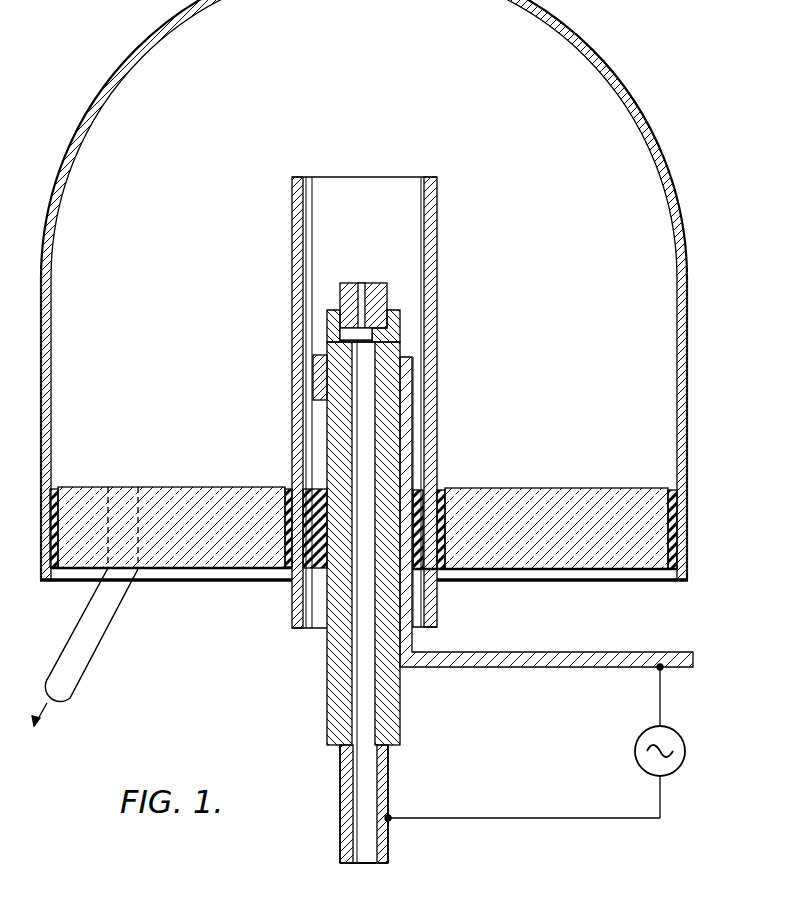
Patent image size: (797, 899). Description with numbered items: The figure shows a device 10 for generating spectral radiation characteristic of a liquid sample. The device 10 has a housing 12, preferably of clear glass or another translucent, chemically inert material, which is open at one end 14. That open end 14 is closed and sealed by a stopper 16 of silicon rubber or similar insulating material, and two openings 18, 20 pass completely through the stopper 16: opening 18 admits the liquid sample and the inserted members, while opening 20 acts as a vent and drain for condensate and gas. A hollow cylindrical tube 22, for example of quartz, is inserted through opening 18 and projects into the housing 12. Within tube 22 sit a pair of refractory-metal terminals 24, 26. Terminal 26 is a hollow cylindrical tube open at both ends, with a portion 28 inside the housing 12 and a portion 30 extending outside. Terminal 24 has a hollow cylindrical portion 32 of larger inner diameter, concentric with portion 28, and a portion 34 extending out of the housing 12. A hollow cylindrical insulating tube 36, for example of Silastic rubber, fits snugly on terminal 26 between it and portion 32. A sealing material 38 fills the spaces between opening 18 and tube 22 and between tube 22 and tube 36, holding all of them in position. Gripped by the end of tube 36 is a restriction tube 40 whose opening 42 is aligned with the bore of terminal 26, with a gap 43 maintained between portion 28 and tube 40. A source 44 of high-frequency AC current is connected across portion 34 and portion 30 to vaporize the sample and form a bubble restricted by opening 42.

The device 10 is at (767, 430).
The housing 12 is at (645, 118).
The open end 14 is at (663, 583).
The stopper 16 is at (607, 565).
The opening 18 is at (440, 583).
The opening 20 is at (120, 580).
The hollow cylindrical tube 22 is at (436, 205).
The electrically conductive terminal 24 is at (312, 375).
The electrically conductive terminal 26 is at (348, 419).
The portion 28 is at (385, 440).
The portion 30 is at (340, 812).
The hollow cylindrical portion 32 is at (313, 357).
The portion 34 is at (412, 637).
The insulating tube 36 is at (398, 327).
The sealing material 38 is at (320, 572).
The tube 40 is at (343, 295).
The opening 42 is at (365, 283).
The gap 43 is at (380, 332).
The source of electrical current 44 is at (683, 748).